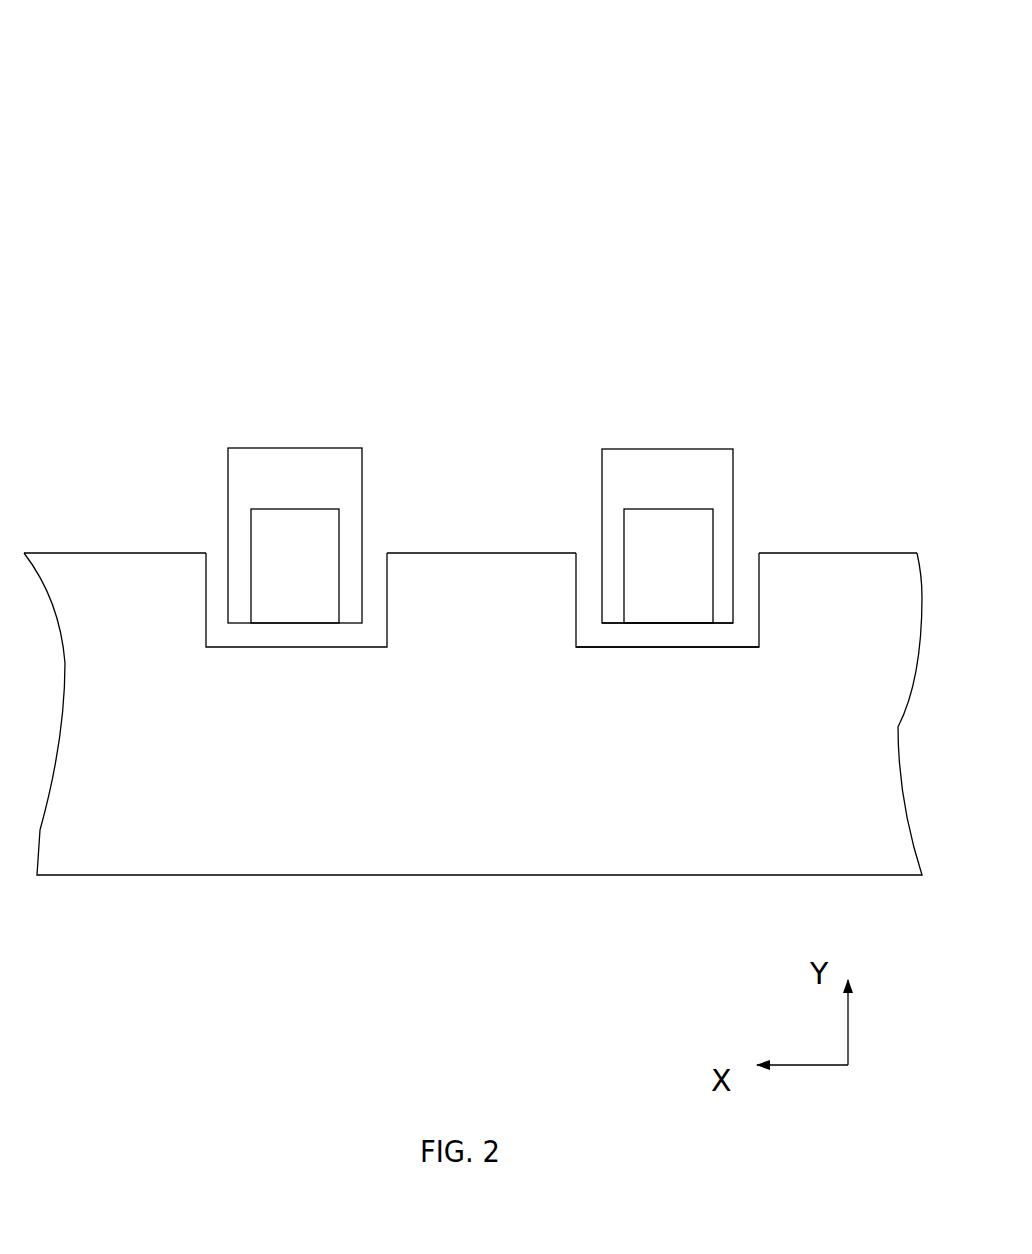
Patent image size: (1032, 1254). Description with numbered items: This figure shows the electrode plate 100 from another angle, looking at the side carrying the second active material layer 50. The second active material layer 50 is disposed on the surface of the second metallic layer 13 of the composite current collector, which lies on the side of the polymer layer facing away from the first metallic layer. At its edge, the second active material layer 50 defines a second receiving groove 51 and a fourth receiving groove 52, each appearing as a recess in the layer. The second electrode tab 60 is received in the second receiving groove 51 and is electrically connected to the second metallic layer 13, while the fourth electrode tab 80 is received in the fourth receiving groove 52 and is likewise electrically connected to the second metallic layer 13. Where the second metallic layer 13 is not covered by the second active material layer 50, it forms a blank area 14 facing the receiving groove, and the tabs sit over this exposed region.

The electrode plate 100 is at (142, 70).
The second active material layer 50 is at (524, 856).
The second receiving groove 51 is at (742, 603).
The fourth receiving groove 52 is at (372, 590).
The second electrode tab 60 is at (659, 493).
The fourth electrode tab 80 is at (318, 482).
The second metallic layer 13 is at (626, 630).
The blank area 14 is at (693, 632).